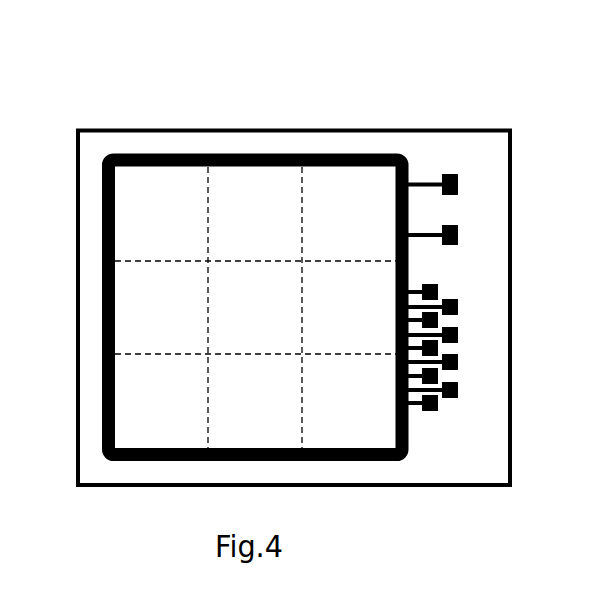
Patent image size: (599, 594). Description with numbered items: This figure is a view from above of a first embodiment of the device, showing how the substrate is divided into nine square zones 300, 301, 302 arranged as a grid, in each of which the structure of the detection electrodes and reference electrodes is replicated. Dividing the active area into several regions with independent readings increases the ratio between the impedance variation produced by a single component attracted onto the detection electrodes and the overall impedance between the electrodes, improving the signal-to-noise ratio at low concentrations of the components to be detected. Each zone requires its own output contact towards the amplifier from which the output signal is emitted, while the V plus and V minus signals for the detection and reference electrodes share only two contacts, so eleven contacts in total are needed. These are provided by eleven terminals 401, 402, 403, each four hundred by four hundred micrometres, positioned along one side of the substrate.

The square zone 300 is at (248, 197).
The square zone 301 is at (143, 219).
The square zone 302 is at (145, 400).
The terminal 401 is at (458, 225).
The terminal 402 is at (457, 303).
The terminal 403 is at (430, 412).